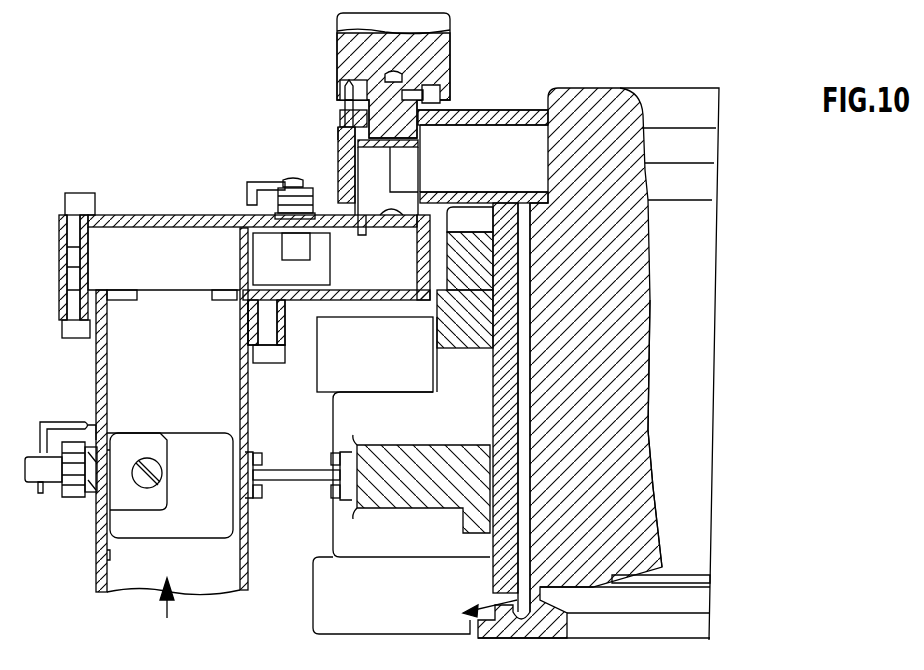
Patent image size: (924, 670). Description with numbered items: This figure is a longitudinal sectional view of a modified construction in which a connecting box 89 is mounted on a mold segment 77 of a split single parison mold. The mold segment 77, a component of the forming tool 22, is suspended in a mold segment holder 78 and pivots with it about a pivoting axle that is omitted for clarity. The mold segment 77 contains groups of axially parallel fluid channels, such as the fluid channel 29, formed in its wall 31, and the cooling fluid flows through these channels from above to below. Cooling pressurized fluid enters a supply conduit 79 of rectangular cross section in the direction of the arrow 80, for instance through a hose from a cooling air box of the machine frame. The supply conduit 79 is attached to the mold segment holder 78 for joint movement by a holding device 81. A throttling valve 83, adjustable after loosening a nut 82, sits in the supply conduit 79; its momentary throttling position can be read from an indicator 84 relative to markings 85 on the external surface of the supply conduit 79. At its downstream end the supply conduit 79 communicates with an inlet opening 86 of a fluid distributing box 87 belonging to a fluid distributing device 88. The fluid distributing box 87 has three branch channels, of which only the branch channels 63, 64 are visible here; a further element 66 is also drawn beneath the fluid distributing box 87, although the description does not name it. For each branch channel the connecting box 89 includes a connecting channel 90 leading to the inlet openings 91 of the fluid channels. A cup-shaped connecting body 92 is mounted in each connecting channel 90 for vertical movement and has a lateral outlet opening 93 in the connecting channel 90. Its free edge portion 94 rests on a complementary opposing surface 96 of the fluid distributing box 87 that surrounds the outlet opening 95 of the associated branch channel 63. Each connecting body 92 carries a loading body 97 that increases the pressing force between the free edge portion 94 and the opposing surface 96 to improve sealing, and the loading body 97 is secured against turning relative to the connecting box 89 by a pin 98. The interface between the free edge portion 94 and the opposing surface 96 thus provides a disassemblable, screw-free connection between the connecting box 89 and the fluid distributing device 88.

The forming tool 22 is at (609, 86).
The fluid channel 29 is at (525, 363).
The wall 31 is at (632, 365).
The branch channel 63 is at (388, 280).
The branch channel 64 is at (213, 222).
The fastening bolt 66 is at (313, 278).
The mold segment 77 is at (697, 88).
The mold segment holder 78 is at (402, 492).
The supply conduit 79 is at (97, 562).
The arrow 80 is at (170, 612).
The holding device 81 is at (293, 482).
The nut 82 is at (72, 498).
The throttling valve 83 is at (213, 408).
The indicator 84 is at (72, 417).
The markings 85 is at (96, 422).
The inlet opening 86 is at (152, 292).
The fluid distributing box 87 is at (151, 210).
The fluid distributing device 88 is at (284, 139).
The connecting box 89 is at (513, 103).
The connecting channel 90 is at (533, 137).
The inlet opening 91 is at (540, 200).
The connecting body 92 is at (358, 157).
The lateral outlet opening 93 is at (392, 167).
The free edge portion 94 is at (350, 213).
The outlet opening 95 is at (366, 224).
The opposing surface 96 is at (393, 211).
The loading body 97 is at (450, 38).
The pin 98 is at (338, 107).